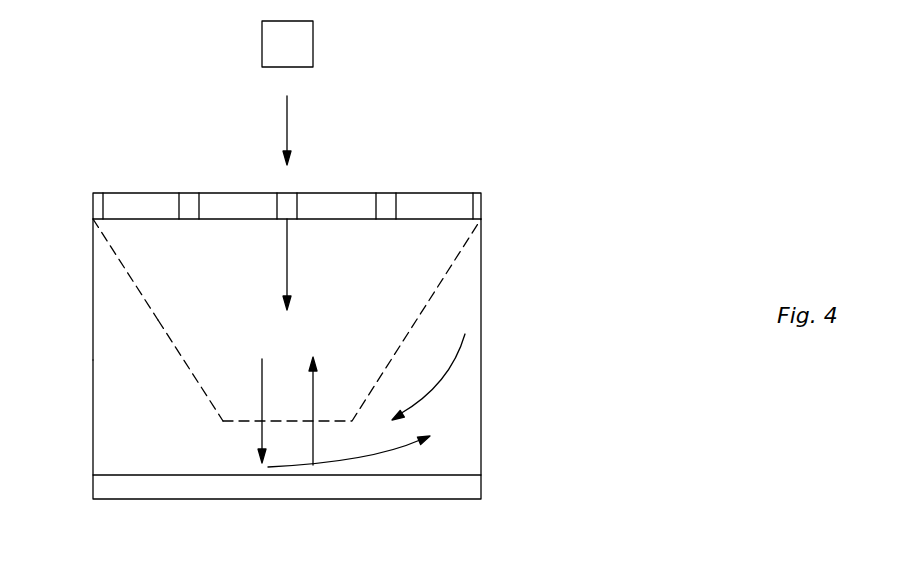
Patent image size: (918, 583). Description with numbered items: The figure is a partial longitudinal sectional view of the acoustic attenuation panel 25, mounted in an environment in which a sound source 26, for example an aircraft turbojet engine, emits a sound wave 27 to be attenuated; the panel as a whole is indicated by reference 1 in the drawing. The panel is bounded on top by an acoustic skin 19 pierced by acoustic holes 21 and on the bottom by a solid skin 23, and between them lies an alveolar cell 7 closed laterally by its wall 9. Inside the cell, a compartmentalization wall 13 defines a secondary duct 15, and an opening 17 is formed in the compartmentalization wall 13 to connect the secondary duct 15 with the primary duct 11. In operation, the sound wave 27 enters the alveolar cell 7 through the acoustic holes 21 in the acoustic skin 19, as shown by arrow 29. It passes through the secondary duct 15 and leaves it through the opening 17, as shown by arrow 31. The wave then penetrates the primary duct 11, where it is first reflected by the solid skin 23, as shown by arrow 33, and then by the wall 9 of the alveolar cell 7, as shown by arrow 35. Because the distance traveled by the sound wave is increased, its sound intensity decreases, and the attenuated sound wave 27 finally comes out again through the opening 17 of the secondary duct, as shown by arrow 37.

The reaction vessel 1 is at (504, 278).
The alveolar cell 7 is at (92, 437).
The wall of the alveolar cell 9 is at (480, 430).
The primary duct 11 is at (93, 398).
The compartmentalization wall 13 is at (158, 310).
The secondary duct 15 is at (130, 284).
The opening 17 is at (228, 421).
The acoustic skin 19 is at (122, 183).
The acoustic holes 21 is at (387, 192).
The solid skin 23 is at (141, 512).
The acoustic attenuation panel 25 is at (499, 138).
The sound source 26 is at (313, 37).
The sound wave 27 is at (289, 112).
The arrow 29 is at (287, 271).
The arrow 31 is at (262, 377).
The arrow 33 is at (378, 468).
The arrow 35 is at (450, 372).
The arrow 37 is at (313, 446).